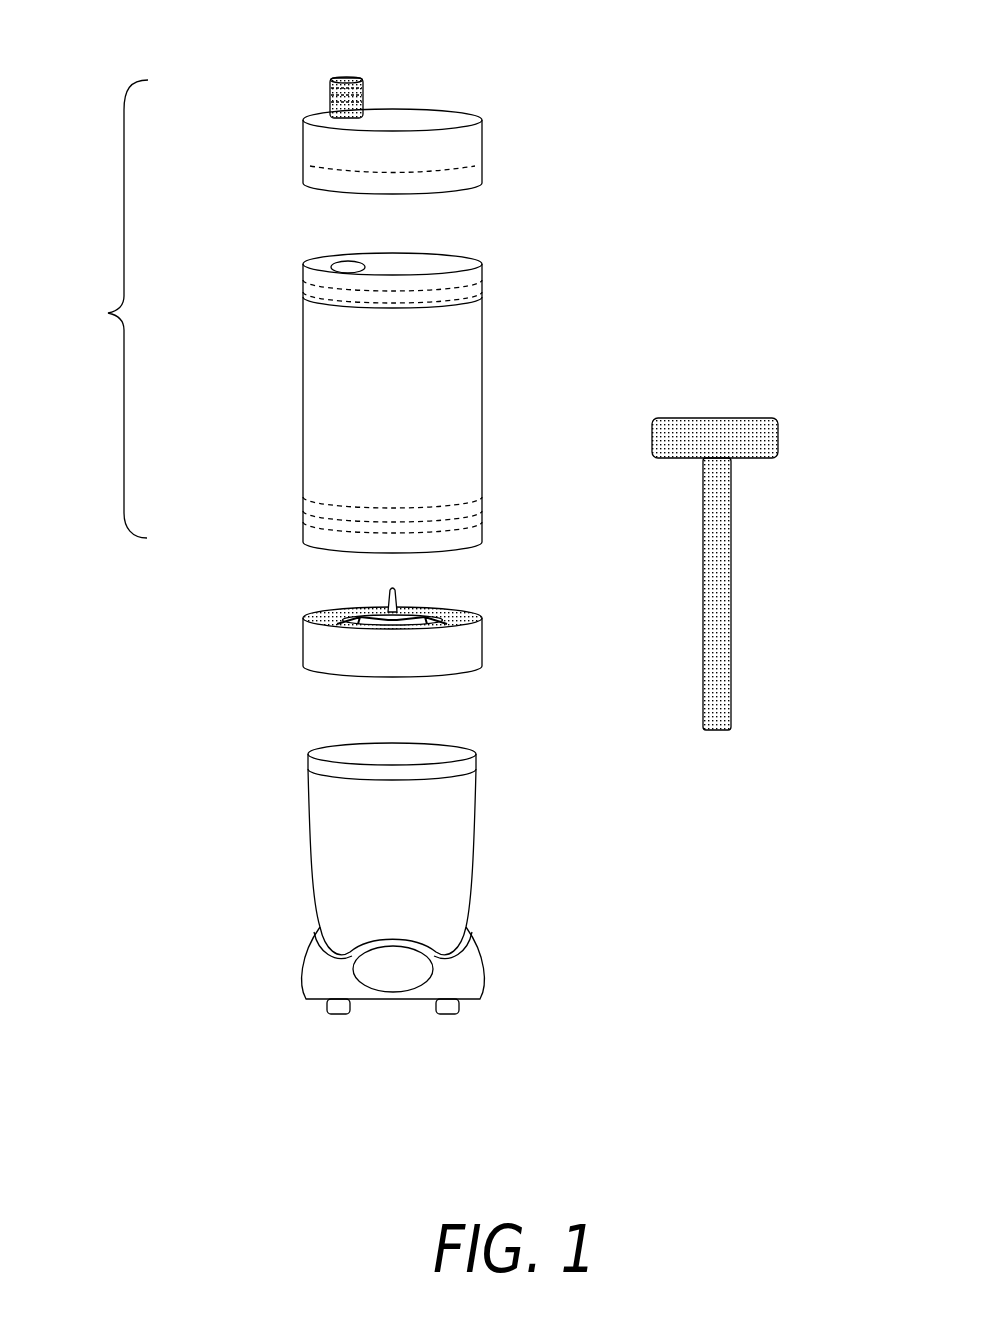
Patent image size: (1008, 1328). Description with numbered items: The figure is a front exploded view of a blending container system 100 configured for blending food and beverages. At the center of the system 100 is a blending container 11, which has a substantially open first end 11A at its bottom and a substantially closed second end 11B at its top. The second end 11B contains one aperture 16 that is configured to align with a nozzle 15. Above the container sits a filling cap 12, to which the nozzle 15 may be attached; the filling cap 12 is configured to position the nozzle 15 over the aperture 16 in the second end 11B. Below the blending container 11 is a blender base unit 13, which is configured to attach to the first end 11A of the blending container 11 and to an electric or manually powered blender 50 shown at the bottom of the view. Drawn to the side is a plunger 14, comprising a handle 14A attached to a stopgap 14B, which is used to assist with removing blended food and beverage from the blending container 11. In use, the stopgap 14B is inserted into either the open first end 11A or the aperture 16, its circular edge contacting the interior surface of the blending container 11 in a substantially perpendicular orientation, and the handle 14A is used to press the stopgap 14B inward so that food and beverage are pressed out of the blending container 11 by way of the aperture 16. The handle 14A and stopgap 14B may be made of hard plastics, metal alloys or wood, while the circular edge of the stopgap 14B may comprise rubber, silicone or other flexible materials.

The blending container system 100 is at (94, 309).
The blending container 11 is at (357, 420).
The first end 11A is at (370, 550).
The second end 11B is at (403, 265).
The filling cap 12 is at (327, 101).
The blender base unit 13 is at (390, 655).
The plunger 14 is at (740, 524).
The handle 14A is at (717, 535).
The stopgap 14B is at (721, 432).
The nozzle 15 is at (330, 93).
The aperture 16 is at (348, 263).
The blender 50 is at (392, 850).